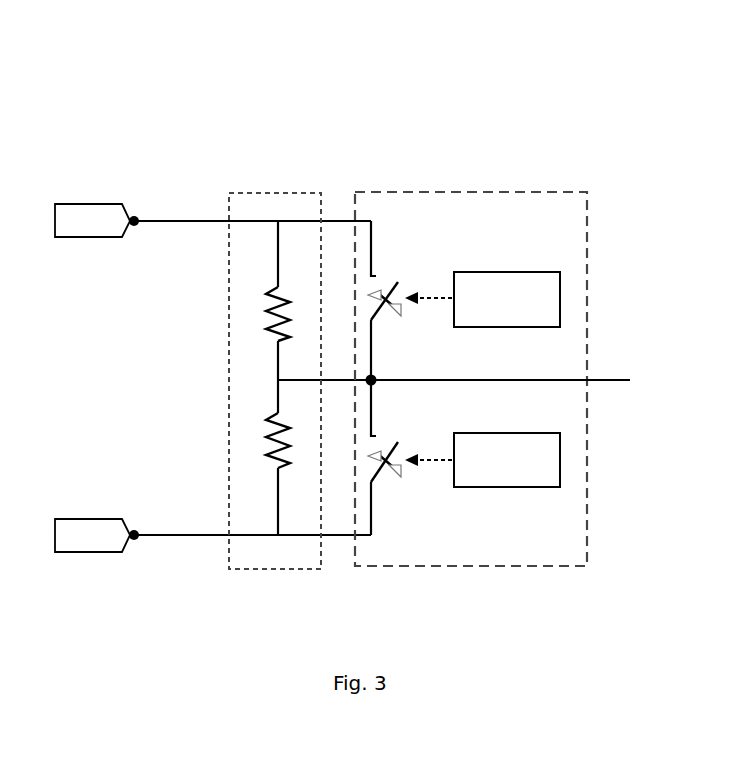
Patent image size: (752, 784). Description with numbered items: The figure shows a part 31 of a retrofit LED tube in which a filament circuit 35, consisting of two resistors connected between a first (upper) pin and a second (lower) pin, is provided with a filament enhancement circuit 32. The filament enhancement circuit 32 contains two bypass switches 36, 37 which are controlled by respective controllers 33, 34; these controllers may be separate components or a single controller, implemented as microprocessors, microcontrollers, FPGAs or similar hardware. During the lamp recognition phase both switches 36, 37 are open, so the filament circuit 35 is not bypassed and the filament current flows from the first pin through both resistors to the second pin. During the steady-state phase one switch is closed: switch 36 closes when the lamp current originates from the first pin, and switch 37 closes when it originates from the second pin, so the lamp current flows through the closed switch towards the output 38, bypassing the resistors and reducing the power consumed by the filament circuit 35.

The part of a retrofit LED tube 31 is at (387, 107).
The filament enhancement circuit 32 is at (533, 187).
The controller 33 is at (558, 268).
The controller 34 is at (556, 465).
The filament circuit 35 is at (260, 190).
The bypass switch 36 is at (385, 272).
The bypass switch 37 is at (387, 491).
The output 38 is at (614, 366).